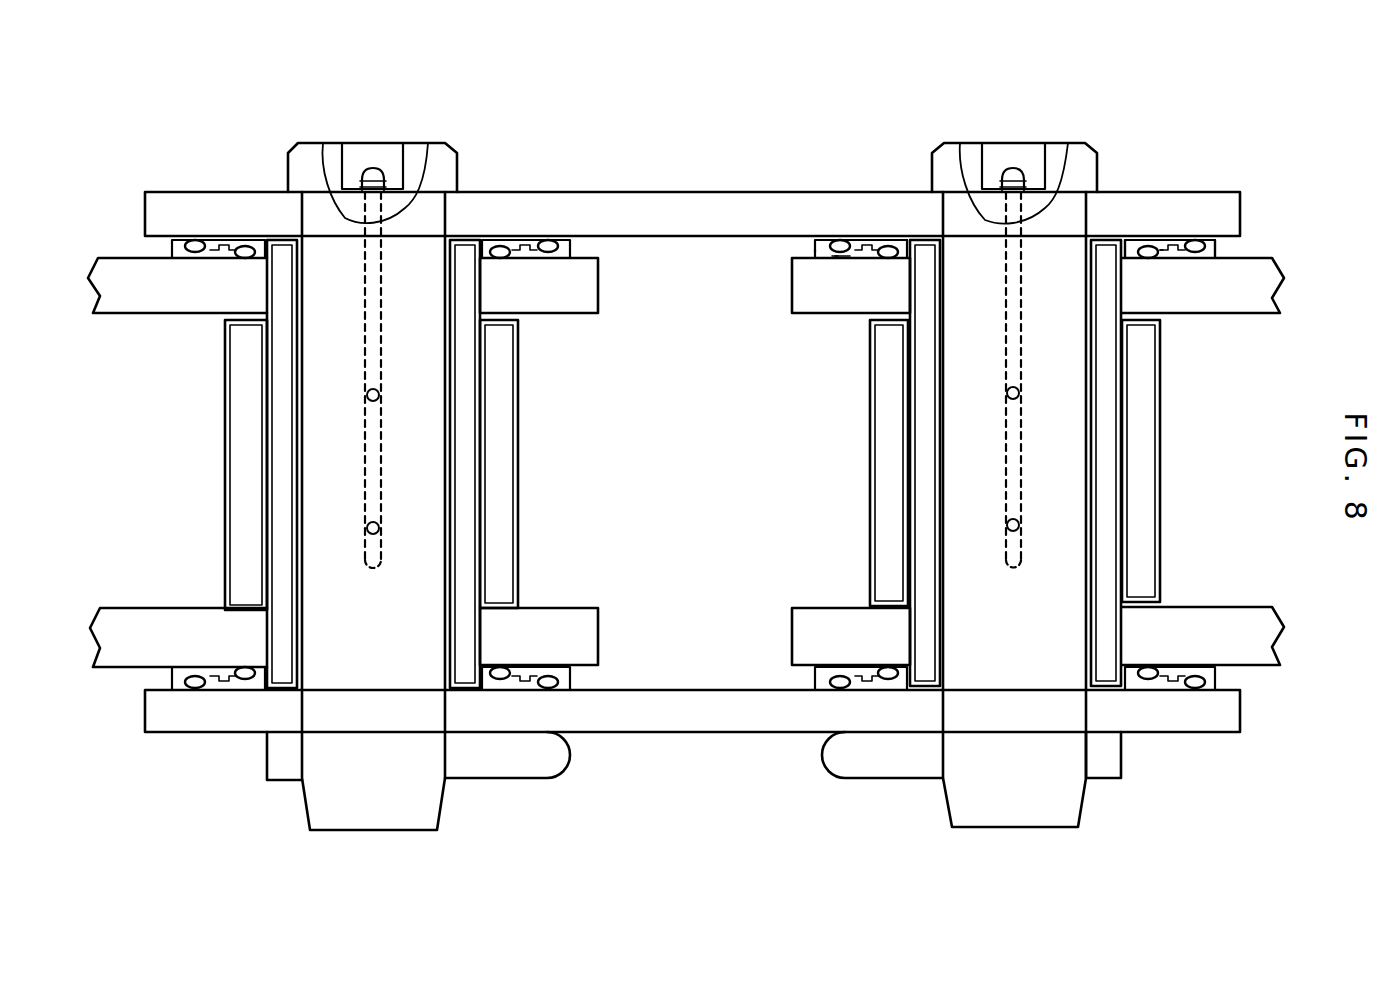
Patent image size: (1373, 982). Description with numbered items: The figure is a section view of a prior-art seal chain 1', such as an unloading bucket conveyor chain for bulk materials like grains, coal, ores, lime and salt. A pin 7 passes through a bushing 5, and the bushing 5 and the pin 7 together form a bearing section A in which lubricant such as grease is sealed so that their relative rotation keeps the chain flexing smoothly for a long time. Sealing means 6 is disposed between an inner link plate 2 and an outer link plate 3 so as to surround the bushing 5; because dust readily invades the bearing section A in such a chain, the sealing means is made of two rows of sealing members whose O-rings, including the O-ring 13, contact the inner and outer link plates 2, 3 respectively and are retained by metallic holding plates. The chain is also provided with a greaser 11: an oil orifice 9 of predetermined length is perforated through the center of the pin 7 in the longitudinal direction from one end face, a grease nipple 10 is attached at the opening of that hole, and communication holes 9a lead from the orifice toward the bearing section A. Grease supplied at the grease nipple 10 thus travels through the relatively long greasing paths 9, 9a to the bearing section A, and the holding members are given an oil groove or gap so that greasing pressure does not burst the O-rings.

The seal chain 1' is at (686, 455).
The inner link plate 2 is at (151, 308).
The outer link plate 3 is at (713, 205).
The bushing 5 is at (460, 528).
The sealing means 6 is at (693, 455).
The pin 7 is at (400, 456).
The oil orifice 9 is at (375, 335).
The communication holes 9a is at (368, 392).
The grease nipple 10 is at (372, 168).
The greaser 11 is at (1002, 160).
The O-ring 13 is at (840, 257).
The bearing section A is at (292, 437).